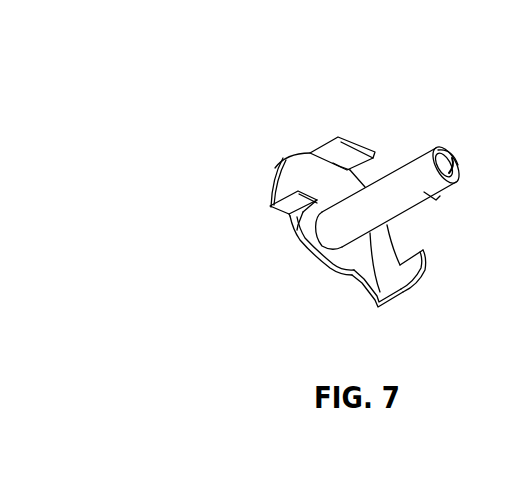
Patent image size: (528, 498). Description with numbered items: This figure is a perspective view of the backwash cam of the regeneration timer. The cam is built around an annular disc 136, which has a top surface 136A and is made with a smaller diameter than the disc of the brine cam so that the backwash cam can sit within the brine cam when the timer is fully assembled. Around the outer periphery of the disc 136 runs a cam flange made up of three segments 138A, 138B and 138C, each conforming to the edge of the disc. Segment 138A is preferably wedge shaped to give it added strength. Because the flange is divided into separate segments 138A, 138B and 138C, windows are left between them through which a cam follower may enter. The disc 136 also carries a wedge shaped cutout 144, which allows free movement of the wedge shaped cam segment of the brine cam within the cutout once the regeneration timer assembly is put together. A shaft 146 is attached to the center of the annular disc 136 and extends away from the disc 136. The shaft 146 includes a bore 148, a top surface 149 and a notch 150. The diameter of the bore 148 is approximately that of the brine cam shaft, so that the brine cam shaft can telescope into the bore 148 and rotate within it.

The annular disc 136 is at (302, 151).
The top surface 136A is at (363, 293).
The cam flange segment 138A is at (270, 200).
The cam flange segment 138B is at (278, 169).
The cam flange segment 138C is at (417, 278).
The wedge shaped cutout 144 is at (297, 251).
The shaft 146 is at (411, 158).
The bore 148 is at (452, 157).
The top surface 149 is at (455, 181).
The notch 150 is at (438, 196).